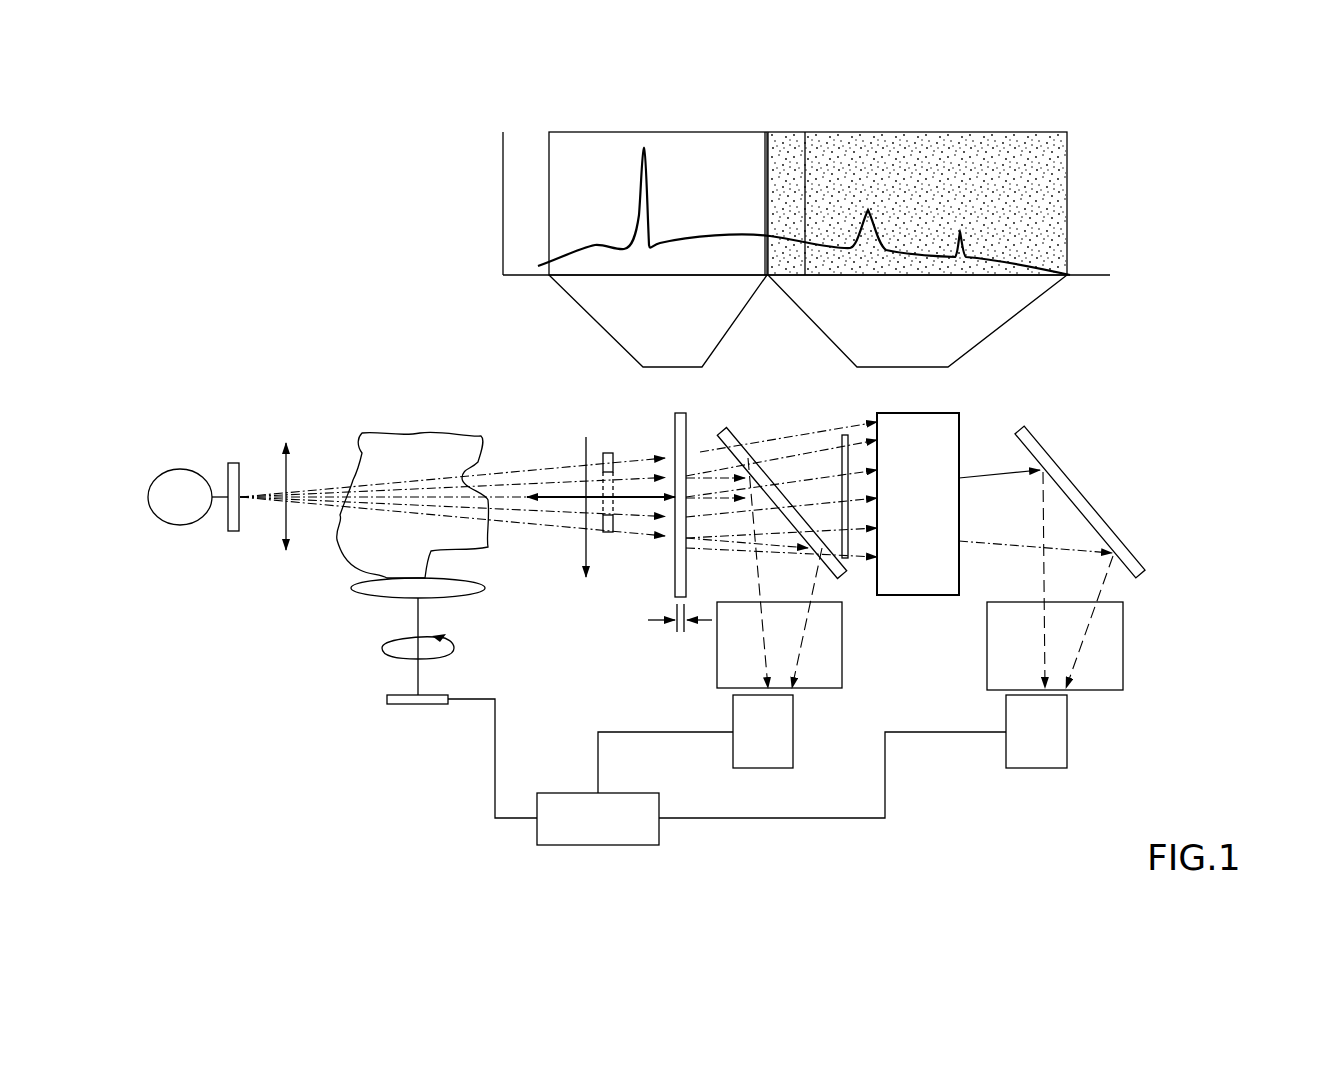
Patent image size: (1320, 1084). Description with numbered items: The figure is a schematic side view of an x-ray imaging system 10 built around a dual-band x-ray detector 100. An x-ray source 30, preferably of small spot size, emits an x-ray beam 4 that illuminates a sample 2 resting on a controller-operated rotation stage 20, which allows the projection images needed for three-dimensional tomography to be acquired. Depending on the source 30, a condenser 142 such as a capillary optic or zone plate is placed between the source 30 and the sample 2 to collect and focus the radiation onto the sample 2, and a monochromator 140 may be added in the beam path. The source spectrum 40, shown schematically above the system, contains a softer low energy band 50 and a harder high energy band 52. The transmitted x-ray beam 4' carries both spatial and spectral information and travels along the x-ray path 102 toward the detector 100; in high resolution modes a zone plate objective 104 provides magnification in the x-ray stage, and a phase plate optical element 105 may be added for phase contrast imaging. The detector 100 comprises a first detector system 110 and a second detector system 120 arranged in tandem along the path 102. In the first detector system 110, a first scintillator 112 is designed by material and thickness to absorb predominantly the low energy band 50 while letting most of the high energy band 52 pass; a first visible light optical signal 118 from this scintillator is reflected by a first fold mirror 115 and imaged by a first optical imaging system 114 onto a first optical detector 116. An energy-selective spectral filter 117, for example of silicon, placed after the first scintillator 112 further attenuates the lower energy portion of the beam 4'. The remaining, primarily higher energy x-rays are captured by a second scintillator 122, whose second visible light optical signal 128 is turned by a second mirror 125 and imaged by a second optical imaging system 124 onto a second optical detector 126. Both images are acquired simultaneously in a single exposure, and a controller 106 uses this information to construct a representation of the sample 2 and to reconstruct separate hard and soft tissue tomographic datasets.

The sample 2 is at (372, 433).
The x-ray beam 4 is at (452, 463).
The transmitted x-ray beam 4' is at (500, 418).
The x-ray imaging system 10 is at (200, 750).
The rotation stage 20 is at (372, 597).
The x-ray source 30 is at (176, 524).
The x-ray spectrum 40 is at (533, 208).
The low energy band 50 is at (658, 234).
The high energy band 52 is at (916, 234).
The x-ray detector 100 is at (478, 713).
The x-ray path 102 is at (568, 500).
The zone plate objective 104 is at (583, 570).
The phase plate optical element 105 is at (610, 534).
The controller 106 is at (659, 843).
The first detector system 110 is at (665, 650).
The first scintillator 112 is at (675, 429).
The first optical imaging system 114 is at (842, 650).
The first fold mirror 115 is at (809, 478).
The first optical detector 116 is at (793, 735).
The spectral filter 117 is at (838, 438).
The first visible light optical signal 118 is at (809, 528).
The second detector system 120 is at (1078, 398).
The second scintillator 122 is at (968, 421).
The second optical imaging system 124 is at (1123, 650).
The second mirror 125 is at (1105, 517).
The second optical detector 126 is at (1067, 740).
The second visible light optical signal 128 is at (1110, 580).
The monochromator 140 is at (234, 532).
The condenser 142 is at (288, 538).